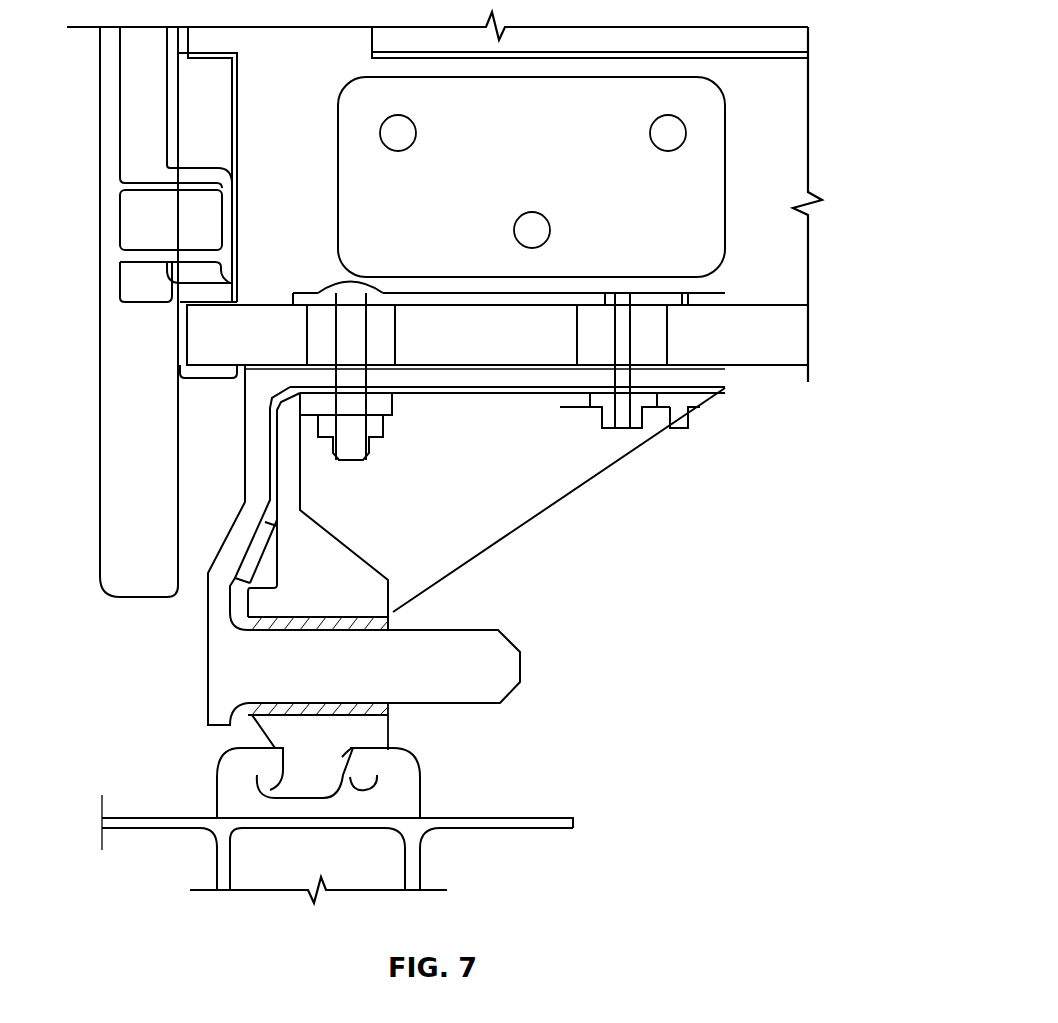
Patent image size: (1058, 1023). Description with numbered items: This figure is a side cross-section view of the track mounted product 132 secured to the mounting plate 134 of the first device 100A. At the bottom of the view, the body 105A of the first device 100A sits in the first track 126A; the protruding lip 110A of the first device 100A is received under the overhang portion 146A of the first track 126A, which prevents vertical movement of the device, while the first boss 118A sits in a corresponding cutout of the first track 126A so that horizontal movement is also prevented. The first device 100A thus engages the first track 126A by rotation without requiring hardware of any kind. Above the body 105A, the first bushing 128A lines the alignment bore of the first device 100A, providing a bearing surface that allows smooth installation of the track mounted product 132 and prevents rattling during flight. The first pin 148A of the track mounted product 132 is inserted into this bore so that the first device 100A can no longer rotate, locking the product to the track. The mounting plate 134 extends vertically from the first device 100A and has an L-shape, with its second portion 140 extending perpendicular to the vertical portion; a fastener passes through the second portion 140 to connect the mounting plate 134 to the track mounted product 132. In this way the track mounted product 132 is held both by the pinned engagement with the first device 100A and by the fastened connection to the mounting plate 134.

The track mounted product 132 is at (818, 326).
The second portion 140 is at (400, 399).
The mounting plate 134 is at (308, 495).
The first device 100A is at (370, 558).
The first pin 148A is at (522, 663).
The first bushing 128A is at (363, 715).
The overhang portion 146A is at (240, 742).
The first boss 118A is at (350, 782).
The body 105A is at (308, 778).
The protruding lip 110A is at (267, 790).
The first track 126A is at (95, 825).